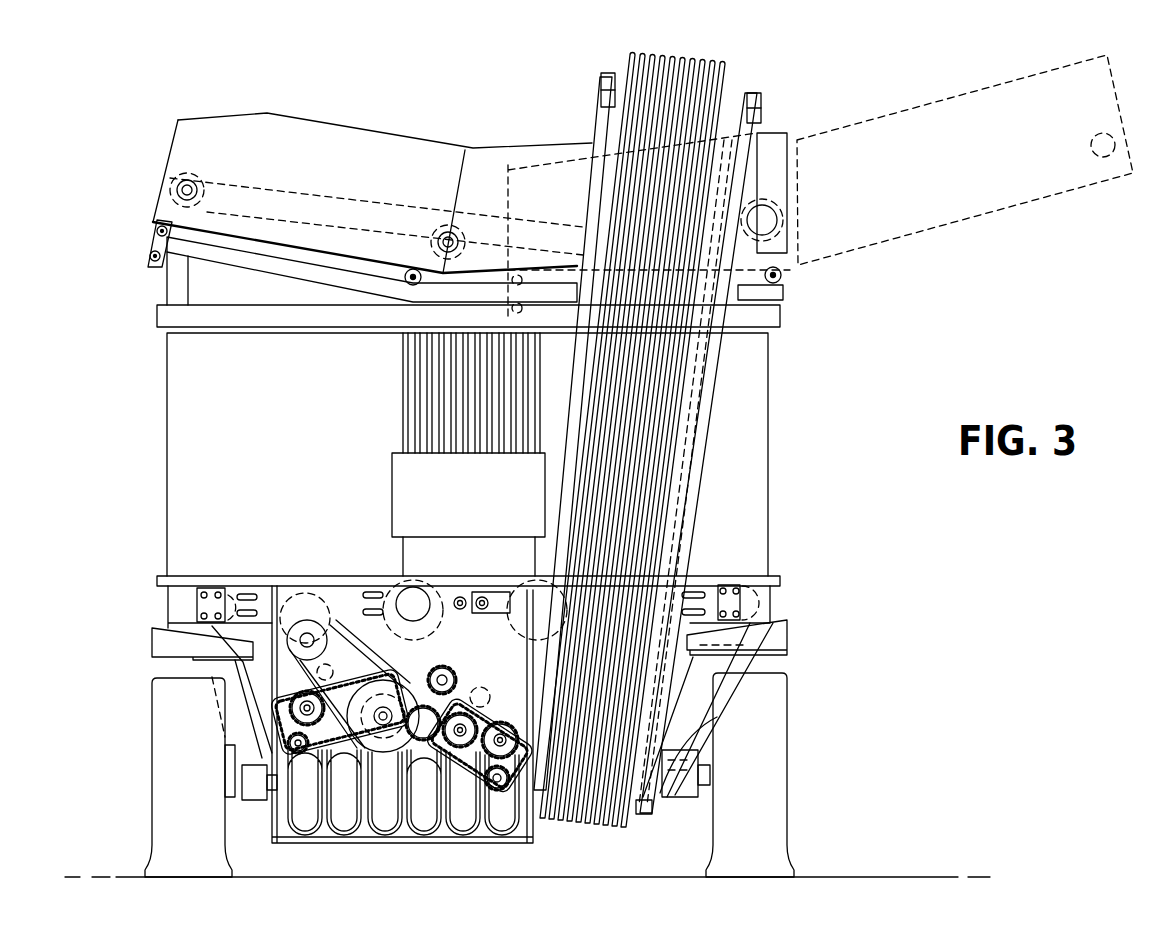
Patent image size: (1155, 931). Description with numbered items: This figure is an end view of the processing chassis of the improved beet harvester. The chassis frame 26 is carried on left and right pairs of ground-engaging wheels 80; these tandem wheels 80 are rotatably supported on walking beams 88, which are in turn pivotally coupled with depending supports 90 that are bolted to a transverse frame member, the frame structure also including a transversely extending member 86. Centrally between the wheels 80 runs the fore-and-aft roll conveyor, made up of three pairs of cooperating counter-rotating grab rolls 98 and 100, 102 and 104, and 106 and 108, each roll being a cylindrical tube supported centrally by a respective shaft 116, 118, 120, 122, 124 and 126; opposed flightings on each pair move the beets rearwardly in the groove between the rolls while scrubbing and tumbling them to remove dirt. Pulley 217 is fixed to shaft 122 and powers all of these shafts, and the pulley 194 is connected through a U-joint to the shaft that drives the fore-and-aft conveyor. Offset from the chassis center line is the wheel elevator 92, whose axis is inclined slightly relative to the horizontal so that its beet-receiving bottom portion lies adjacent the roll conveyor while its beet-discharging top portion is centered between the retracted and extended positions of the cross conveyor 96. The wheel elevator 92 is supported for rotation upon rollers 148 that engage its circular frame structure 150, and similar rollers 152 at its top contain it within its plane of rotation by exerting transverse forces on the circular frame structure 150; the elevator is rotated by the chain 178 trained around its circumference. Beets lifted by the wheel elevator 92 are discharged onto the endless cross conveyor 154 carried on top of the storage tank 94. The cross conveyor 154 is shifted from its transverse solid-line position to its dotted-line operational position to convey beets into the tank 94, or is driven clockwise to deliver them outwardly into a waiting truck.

The chassis frame 26 is at (154, 605).
The ground-engaging wheels 80 is at (167, 768).
The transversely extending member 86 is at (325, 596).
The walking beams 88 is at (270, 774).
The depending supports 90 is at (220, 672).
The wheel elevator 92 is at (722, 479).
The storage tank 94 is at (305, 432).
The cross conveyor 96 is at (355, 174).
The grab roll 98 is at (505, 822).
The grab roll 100 is at (462, 820).
The grab roll 102 is at (424, 822).
The grab roll 104 is at (386, 822).
The grab roll 106 is at (345, 820).
The grab roll 108 is at (305, 820).
The shaft 116 is at (500, 740).
The shaft 118 is at (462, 727).
The shaft 120 is at (387, 706).
The shaft 122 is at (393, 700).
The shaft 124 is at (327, 720).
The shaft 126 is at (300, 706).
The rollers 148 is at (643, 813).
The circular frame structure 150 is at (722, 432).
The rollers 152 is at (603, 92).
The endless cross conveyor 154 is at (262, 186).
The chain 178 is at (692, 521).
The pulley 194 is at (303, 622).
The pulley 217 is at (327, 758).